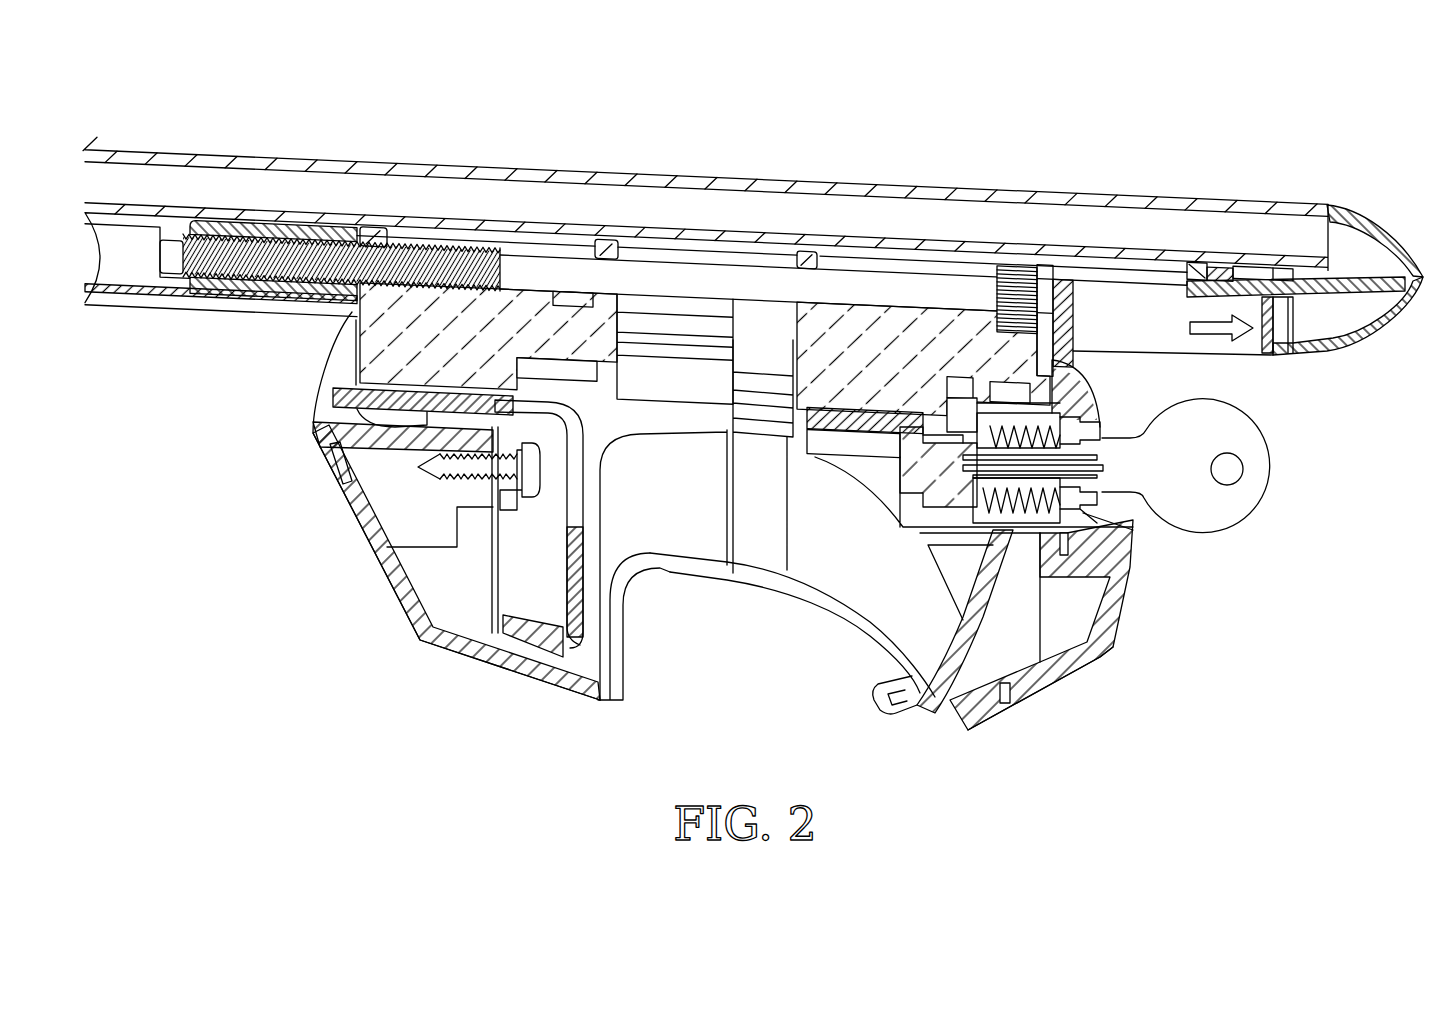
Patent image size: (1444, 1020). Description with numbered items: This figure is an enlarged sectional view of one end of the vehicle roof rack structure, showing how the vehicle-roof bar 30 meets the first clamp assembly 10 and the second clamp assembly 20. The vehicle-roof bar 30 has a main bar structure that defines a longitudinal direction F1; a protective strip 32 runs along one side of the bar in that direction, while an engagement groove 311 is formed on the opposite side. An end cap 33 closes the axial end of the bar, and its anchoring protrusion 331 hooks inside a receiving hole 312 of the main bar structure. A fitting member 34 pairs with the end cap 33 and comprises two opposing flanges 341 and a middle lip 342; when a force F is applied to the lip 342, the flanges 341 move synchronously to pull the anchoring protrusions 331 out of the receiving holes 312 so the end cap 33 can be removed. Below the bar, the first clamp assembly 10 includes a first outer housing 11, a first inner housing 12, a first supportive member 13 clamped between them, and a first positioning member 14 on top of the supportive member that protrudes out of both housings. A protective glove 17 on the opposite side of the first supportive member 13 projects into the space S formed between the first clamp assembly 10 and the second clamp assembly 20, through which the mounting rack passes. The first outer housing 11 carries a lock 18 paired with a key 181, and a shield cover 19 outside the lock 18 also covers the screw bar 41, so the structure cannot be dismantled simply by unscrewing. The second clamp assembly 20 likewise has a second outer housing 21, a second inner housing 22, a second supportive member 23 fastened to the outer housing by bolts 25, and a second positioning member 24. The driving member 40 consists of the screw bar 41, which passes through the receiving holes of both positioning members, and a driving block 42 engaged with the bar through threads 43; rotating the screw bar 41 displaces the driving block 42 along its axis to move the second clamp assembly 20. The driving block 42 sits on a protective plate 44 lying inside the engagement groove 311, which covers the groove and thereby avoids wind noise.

The first clamp assembly 10 is at (1151, 600).
The first outer housing 11 is at (1115, 627).
The first inner housing 12 is at (800, 588).
The first supportive member 13 is at (965, 660).
The first positioning member 14 is at (903, 340).
The protective glove 17 is at (883, 707).
The lock 18 is at (897, 473).
The key 181 is at (1258, 493).
The shield cover 19 is at (1080, 393).
The second clamp assembly 20 is at (347, 574).
The second outer housing 21 is at (410, 608).
The second inner housing 22 is at (620, 633).
The second supportive member 23 is at (573, 481).
The second positioning member 24 is at (377, 350).
The bolts 25 is at (418, 465).
The vehicle-roof bar 30 is at (1364, 203).
The engagement groove 311 is at (1146, 330).
The receiving hole 312 is at (1190, 262).
The protective strip 32 is at (1078, 197).
The end cap 33 is at (1380, 330).
The anchoring protrusion 331 is at (1205, 266).
The fitting member 34 is at (1176, 299).
The flange 341 is at (1265, 357).
The lip 342 is at (1255, 270).
The driving member 40 is at (741, 125).
The screw bar 41 is at (686, 280).
The driving block 42 is at (302, 235).
The threads 43 is at (272, 237).
The protective plate 44 is at (145, 297).
The space S is at (724, 658).
The force F is at (1175, 326).
The longitudinal direction F1 is at (693, 63).